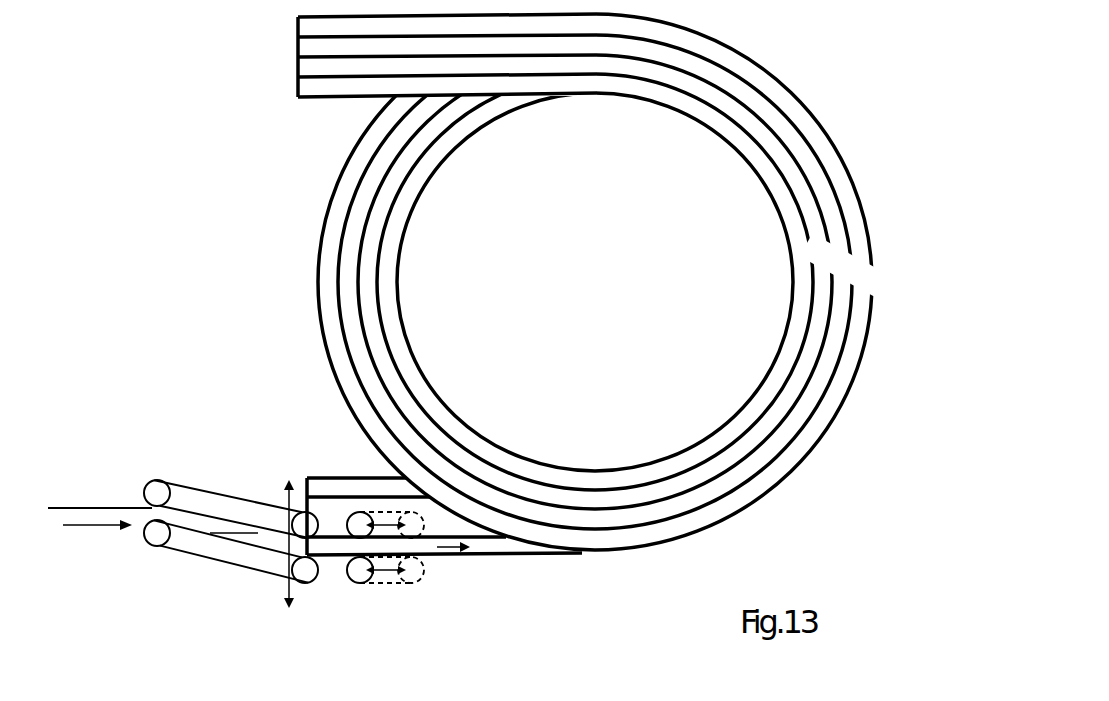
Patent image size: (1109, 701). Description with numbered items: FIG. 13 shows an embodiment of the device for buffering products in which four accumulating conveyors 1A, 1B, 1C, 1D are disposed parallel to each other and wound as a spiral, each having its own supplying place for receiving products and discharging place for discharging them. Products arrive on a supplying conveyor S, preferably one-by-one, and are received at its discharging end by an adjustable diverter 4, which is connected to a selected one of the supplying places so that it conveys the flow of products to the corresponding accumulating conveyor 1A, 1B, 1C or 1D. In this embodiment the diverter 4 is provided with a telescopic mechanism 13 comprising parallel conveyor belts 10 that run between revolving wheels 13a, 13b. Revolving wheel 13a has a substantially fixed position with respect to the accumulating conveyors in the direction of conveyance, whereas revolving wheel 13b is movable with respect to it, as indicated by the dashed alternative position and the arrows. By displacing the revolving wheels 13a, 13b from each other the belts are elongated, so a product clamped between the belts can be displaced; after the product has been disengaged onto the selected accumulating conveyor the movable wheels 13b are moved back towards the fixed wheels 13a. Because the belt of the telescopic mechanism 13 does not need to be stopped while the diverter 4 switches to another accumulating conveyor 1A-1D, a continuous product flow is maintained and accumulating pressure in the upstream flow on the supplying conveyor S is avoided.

The supplying conveyor S is at (110, 533).
The adjustable diverter 4 is at (184, 560).
The conveyor belt 10 is at (270, 532).
The telescopic mechanism 13 is at (340, 573).
The revolving wheel 13a is at (311, 573).
The revolving wheel 13b is at (365, 573).
The accumulating conveyor 1A is at (533, 537).
The accumulating conveyor 1B is at (578, 522).
The accumulating conveyor 1C is at (607, 502).
The accumulating conveyor 1D is at (642, 478).